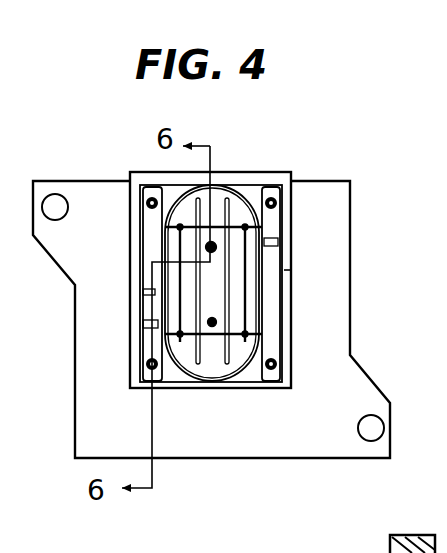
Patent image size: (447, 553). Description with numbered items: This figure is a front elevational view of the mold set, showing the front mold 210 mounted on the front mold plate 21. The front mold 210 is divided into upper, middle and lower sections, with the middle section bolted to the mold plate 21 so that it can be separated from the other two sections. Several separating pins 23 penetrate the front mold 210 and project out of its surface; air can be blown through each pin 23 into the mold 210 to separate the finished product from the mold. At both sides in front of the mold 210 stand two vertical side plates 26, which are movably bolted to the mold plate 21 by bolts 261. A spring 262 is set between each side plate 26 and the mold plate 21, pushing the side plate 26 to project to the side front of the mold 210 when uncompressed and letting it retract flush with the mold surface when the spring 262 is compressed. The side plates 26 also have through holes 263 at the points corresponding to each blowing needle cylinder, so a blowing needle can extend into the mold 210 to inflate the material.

The front mold plate 21 is at (343, 294).
The vertical side plates 26 is at (155, 247).
The front mold 210 is at (240, 194).
The separating pins 23 is at (217, 322).
The bolts 261 is at (276, 203).
The spring 262 is at (291, 270).
The through holes 263 is at (278, 242).